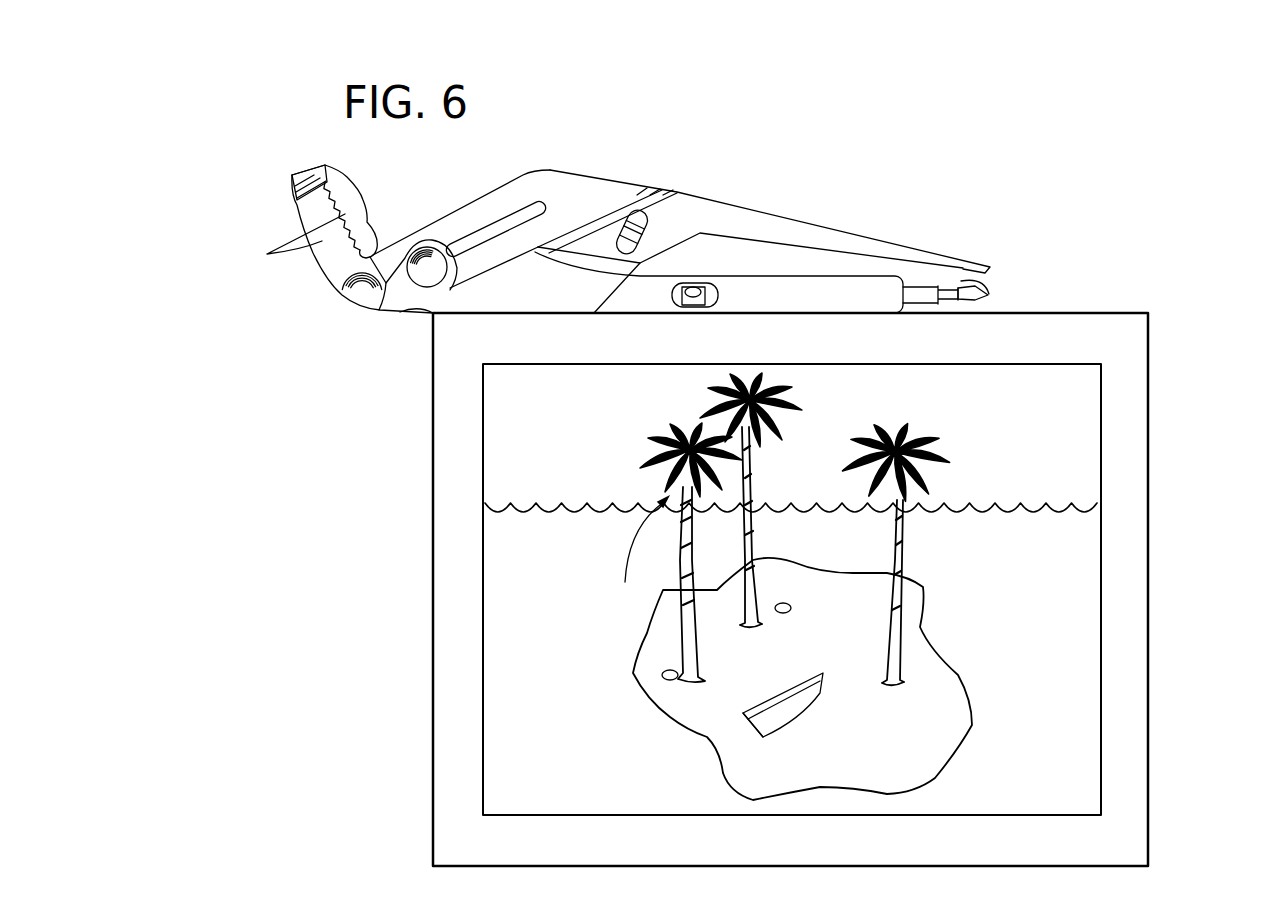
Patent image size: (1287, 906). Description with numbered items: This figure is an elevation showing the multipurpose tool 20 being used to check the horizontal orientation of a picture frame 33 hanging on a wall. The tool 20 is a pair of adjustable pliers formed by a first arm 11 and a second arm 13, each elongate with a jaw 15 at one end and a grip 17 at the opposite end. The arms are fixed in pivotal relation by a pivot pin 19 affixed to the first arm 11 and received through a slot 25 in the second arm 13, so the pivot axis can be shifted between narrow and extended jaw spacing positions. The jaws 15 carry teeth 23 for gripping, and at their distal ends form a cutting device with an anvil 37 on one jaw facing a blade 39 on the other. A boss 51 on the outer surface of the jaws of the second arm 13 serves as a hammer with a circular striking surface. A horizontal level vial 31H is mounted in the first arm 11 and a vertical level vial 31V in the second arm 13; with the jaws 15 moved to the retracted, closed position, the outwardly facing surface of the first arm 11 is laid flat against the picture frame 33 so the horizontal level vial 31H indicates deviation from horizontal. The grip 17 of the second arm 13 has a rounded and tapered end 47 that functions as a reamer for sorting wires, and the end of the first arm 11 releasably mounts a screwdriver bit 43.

The first arm 11 is at (826, 330).
The second arm 13 is at (678, 172).
The jaw 15 is at (378, 212).
The grip 17 is at (783, 293).
The pivot pin 19 is at (427, 283).
The multipurpose tool 20 is at (834, 100).
The teeth 23 is at (280, 252).
The slot 25 is at (377, 314).
The vertical level vial 31V is at (636, 208).
The horizontal level vial 31H is at (682, 292).
The picture frame 33 is at (1148, 580).
The anvil 37 is at (325, 165).
The blade 39 is at (295, 184).
The screwdriver bit 43 is at (978, 289).
The rounded and tapered end 47 is at (988, 268).
The boss 51 is at (350, 303).